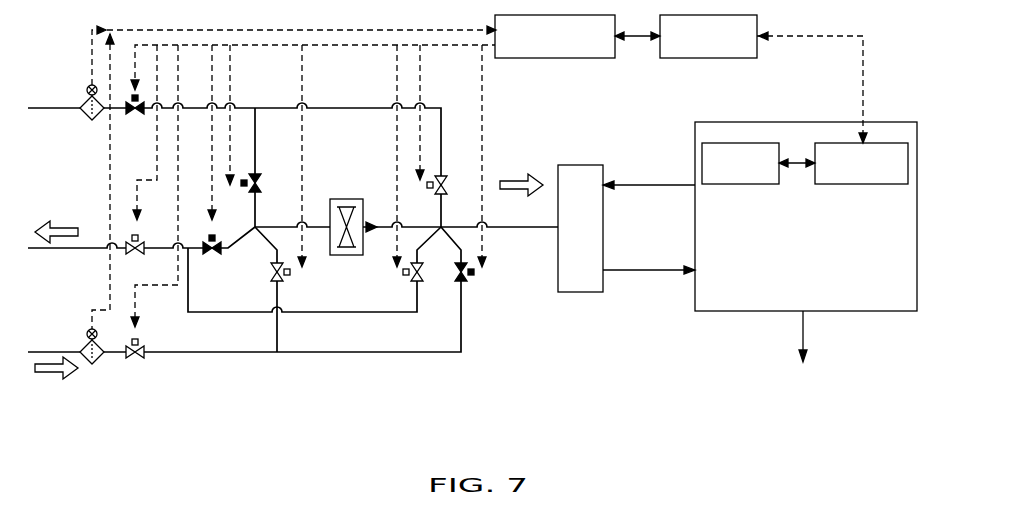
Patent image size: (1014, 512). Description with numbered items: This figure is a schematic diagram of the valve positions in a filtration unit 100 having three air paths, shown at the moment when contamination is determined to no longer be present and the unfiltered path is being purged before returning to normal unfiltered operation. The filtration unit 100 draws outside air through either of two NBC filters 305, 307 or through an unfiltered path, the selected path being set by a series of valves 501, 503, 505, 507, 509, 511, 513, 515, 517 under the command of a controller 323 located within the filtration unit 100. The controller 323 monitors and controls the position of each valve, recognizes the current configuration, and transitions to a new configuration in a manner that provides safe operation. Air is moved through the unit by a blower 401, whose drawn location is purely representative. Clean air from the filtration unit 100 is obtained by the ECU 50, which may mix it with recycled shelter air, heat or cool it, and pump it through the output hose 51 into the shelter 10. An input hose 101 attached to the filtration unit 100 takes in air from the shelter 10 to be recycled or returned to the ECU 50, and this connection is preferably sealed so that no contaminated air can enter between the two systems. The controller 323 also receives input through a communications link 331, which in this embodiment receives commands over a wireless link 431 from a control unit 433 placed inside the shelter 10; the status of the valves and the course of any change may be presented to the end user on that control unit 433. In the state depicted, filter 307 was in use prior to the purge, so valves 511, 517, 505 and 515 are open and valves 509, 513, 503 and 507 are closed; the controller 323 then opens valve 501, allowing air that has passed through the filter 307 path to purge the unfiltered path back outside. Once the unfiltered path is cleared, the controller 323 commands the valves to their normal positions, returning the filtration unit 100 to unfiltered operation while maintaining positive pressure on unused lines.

The filtration unit 100 is at (272, 380).
The filter 305 is at (80, 116).
The filter 307 is at (101, 358).
The valve 509 is at (136, 115).
The valve 501 is at (140, 240).
The valve 503 is at (218, 240).
The valve 511 is at (144, 344).
The valve 513 is at (257, 178).
The valve 505 is at (445, 177).
The valve 517 is at (272, 268).
The valve 515 is at (421, 283).
The valve 507 is at (465, 278).
The blower 401 is at (345, 255).
The controller 323 is at (570, 59).
The communications link 331 is at (690, 59).
The control unit 433 is at (737, 185).
The wireless link 431 is at (888, 185).
The ECU 50 is at (578, 293).
The input hose 101 is at (648, 186).
The output hose 51 is at (650, 268).
The shelter 10 is at (725, 312).